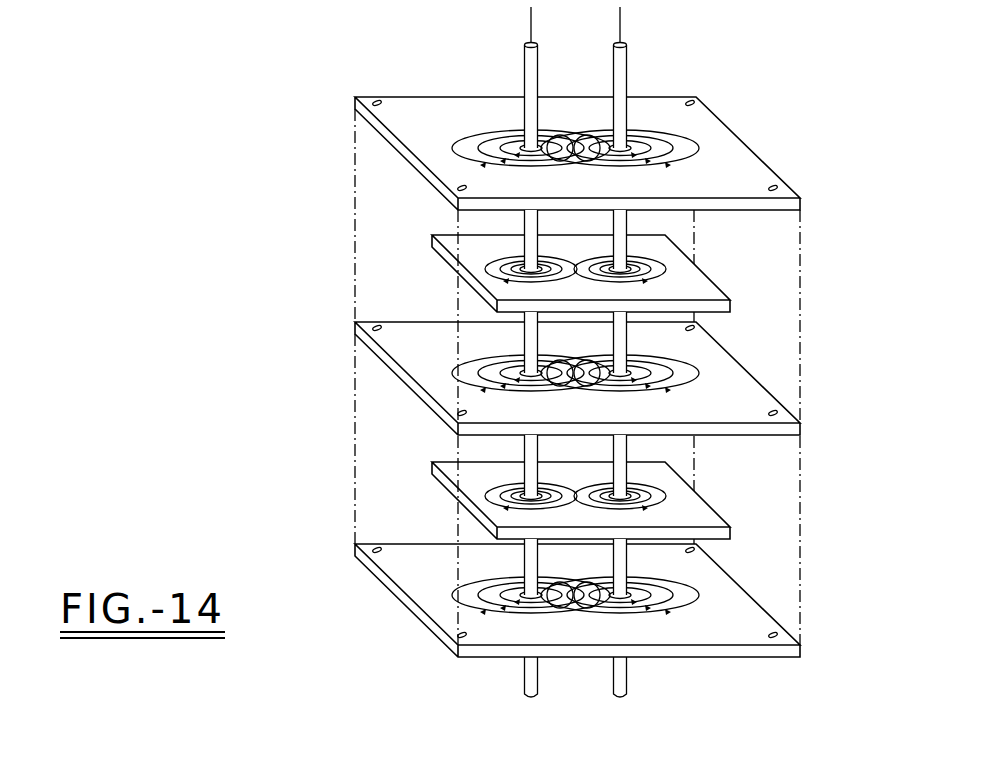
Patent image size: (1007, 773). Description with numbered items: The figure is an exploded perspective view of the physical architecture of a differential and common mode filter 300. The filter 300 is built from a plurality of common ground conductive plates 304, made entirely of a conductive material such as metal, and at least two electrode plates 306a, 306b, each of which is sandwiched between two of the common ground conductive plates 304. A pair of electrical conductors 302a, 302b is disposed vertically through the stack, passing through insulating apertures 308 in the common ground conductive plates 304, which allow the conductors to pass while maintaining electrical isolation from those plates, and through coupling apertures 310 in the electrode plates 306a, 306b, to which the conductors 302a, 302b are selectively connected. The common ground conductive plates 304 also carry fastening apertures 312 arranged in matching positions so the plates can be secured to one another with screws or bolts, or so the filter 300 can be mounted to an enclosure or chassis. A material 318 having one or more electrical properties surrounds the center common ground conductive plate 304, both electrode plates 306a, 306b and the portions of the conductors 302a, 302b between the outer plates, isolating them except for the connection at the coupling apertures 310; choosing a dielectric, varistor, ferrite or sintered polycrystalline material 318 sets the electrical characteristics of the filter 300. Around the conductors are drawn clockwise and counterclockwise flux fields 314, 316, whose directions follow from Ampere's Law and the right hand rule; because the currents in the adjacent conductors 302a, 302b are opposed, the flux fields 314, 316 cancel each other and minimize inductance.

The differential and common mode filter 300 is at (329, 197).
The electrical conductor 302a is at (627, 68).
The electrical conductor 302b is at (524, 58).
The common ground conductive plate 304 is at (748, 162).
The electrode plate 306a is at (702, 288).
The electrode plate 306b is at (708, 510).
The insulating aperture 308 is at (524, 146).
The coupling aperture 310 is at (632, 266).
The fastening aperture 312 is at (377, 103).
The clockwise flux field 314 is at (700, 150).
The counterclockwise flux field 316 is at (458, 153).
The material 318 is at (355, 445).